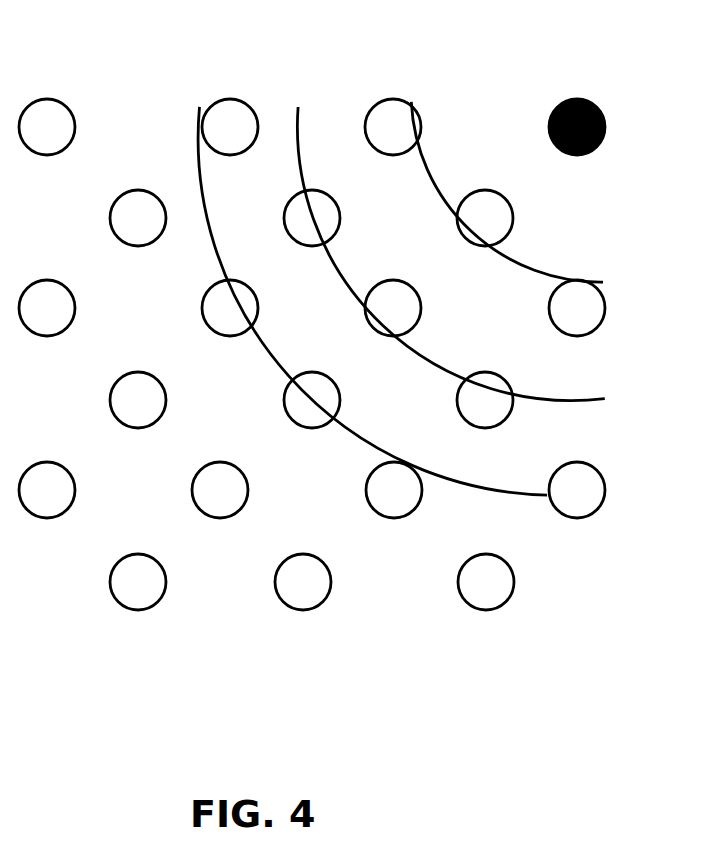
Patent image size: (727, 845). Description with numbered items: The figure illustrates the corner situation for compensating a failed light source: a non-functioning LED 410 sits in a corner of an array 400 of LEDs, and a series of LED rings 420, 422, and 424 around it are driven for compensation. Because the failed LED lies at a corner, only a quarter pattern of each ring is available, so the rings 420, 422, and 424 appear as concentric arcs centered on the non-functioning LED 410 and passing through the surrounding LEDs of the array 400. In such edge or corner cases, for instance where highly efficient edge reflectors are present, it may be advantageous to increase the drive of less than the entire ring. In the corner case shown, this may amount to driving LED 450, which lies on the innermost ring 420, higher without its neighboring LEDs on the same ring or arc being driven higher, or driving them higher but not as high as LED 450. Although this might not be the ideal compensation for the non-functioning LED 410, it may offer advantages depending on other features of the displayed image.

The array 400 is at (312, 389).
The non-functioning LED 410 is at (617, 107).
The LED ring 420 is at (440, 155).
The LED ring 422 is at (310, 148).
The LED ring 424 is at (186, 149).
The LED 450 is at (523, 210).